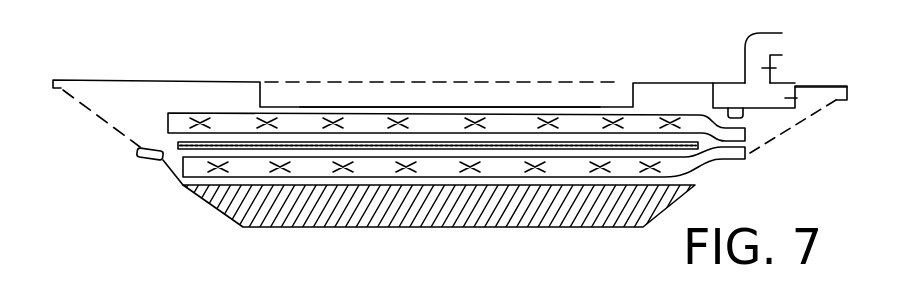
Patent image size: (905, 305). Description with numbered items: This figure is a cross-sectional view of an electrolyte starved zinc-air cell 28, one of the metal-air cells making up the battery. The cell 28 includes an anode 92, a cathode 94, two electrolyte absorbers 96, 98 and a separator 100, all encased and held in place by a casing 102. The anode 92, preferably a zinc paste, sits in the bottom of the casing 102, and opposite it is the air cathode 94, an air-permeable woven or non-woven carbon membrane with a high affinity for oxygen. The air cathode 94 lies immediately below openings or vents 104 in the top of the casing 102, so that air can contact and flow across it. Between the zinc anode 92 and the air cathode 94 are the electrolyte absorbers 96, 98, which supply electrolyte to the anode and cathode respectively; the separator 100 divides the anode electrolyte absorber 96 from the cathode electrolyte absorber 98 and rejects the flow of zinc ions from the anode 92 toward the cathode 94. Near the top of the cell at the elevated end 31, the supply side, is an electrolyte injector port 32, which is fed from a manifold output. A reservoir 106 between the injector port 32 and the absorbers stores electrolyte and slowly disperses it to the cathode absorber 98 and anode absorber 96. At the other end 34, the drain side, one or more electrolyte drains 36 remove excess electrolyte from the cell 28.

The zinc-air cell 28 is at (516, 54).
The end of the cell 31 is at (798, 141).
The electrolyte injector port 32 is at (772, 68).
The other end of the cell 34 is at (78, 112).
The electrolyte drain 36 is at (147, 161).
The anode 92 is at (500, 207).
The cathode 94 is at (333, 100).
The electrolyte absorber 96 is at (700, 163).
The electrolyte absorber 98 is at (748, 133).
The separator 100 is at (178, 145).
The casing 102 is at (178, 81).
The openings or vents 104 is at (450, 78).
The reservoir 106 is at (790, 98).